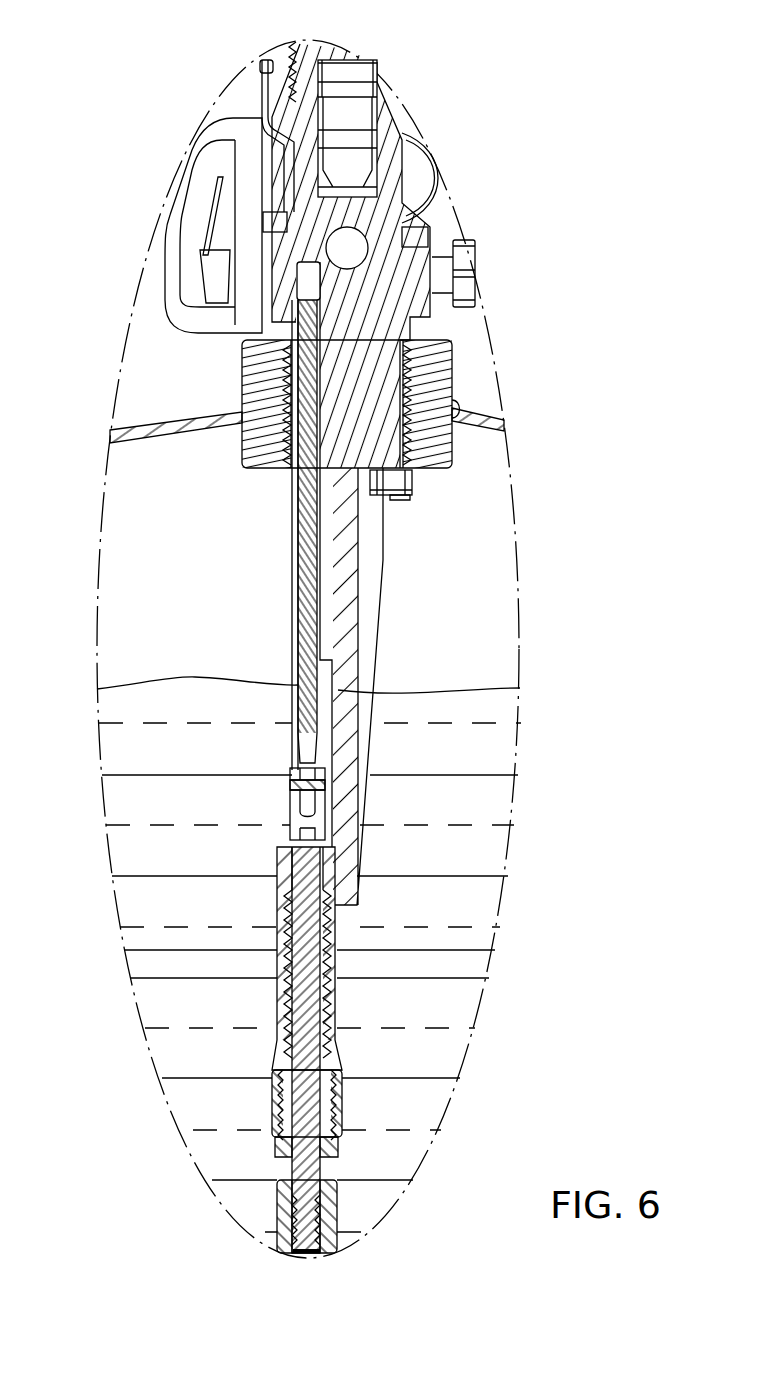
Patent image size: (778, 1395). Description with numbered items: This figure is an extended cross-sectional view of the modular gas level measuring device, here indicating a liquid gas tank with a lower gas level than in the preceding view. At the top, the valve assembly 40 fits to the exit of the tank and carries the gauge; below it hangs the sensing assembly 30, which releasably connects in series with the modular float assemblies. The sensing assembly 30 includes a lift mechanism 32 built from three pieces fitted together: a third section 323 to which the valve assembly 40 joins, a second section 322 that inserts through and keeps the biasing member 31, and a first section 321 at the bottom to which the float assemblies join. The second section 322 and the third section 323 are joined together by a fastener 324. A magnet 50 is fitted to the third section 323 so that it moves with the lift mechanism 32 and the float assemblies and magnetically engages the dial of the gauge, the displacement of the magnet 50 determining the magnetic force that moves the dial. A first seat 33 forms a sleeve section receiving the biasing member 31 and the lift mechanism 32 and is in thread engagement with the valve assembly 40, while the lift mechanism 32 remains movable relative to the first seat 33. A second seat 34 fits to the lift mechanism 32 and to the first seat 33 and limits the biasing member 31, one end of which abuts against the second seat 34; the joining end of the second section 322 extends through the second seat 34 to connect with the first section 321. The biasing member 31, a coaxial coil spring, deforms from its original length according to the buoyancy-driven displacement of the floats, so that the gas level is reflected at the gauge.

The sensing assembly 30 is at (267, 1102).
The biasing member 31 is at (292, 978).
The lift mechanism 32 is at (270, 1193).
The first seat 33 is at (348, 627).
The second seat 34 is at (273, 1150).
The valve assembly 40 is at (163, 208).
The magnet 50 is at (298, 292).
The first section 321 is at (283, 1215).
The second section 322 is at (293, 893).
The third section 323 is at (298, 572).
The fastener 324 is at (292, 786).